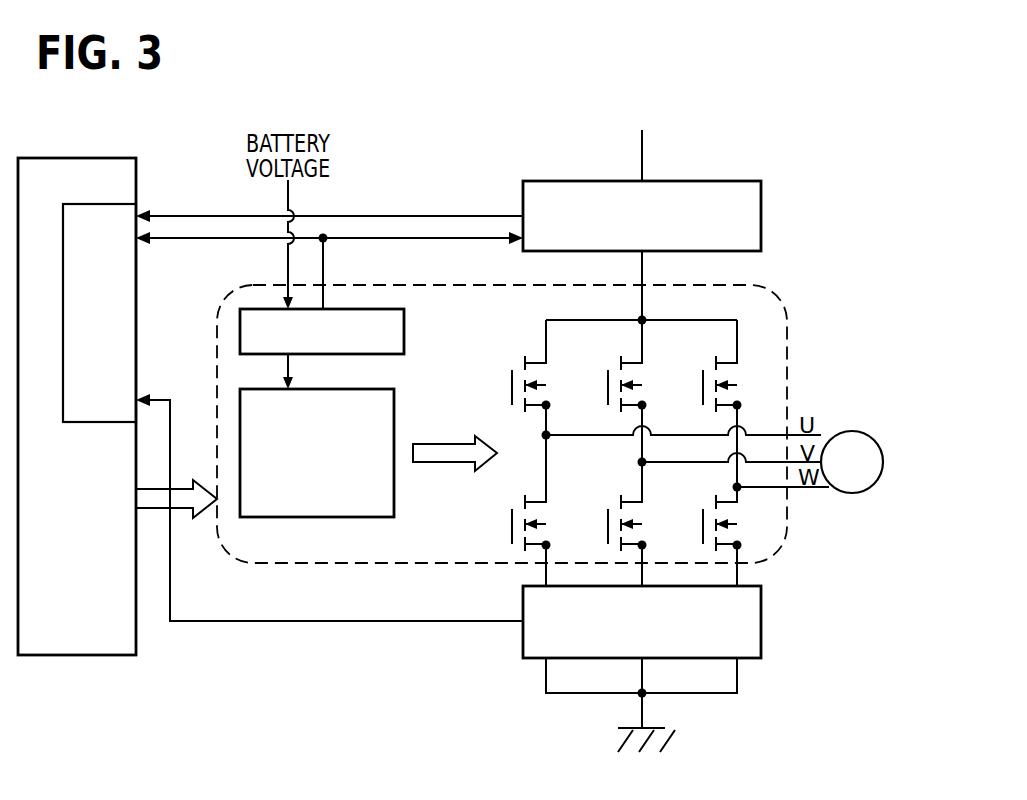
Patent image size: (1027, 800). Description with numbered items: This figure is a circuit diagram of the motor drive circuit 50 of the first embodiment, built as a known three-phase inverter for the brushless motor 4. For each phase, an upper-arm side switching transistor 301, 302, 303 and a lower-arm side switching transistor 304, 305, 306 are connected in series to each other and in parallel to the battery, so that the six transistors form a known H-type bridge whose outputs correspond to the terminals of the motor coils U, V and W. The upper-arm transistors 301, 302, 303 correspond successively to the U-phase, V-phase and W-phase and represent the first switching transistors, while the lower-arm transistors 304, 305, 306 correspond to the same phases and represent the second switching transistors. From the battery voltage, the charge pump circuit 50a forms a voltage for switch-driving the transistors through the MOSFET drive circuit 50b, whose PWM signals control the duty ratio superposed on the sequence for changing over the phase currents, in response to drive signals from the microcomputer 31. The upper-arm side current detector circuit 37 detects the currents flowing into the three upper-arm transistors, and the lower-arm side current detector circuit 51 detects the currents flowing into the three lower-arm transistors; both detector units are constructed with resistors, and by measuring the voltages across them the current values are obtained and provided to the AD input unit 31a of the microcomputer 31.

The microcomputer 31 is at (85, 158).
The AD input unit 31a is at (90, 422).
The upper-arm side current detector circuit 37 is at (695, 181).
The motor drive circuit 50 is at (755, 285).
The charge pump circuit 50a is at (405, 322).
The MOSFET drive circuit 50b is at (394, 393).
The upper-arm side switching transistor 301 is at (555, 378).
The upper-arm side switching transistor 302 is at (649, 378).
The upper-arm side switching transistor 303 is at (742, 378).
The lower-arm side switching transistor 304 is at (555, 528).
The lower-arm side switching transistor 305 is at (649, 528).
The lower-arm side switching transistor 306 is at (743, 532).
The brushless motor 4 is at (848, 431).
The lower-arm side current detector circuit 51 is at (763, 611).